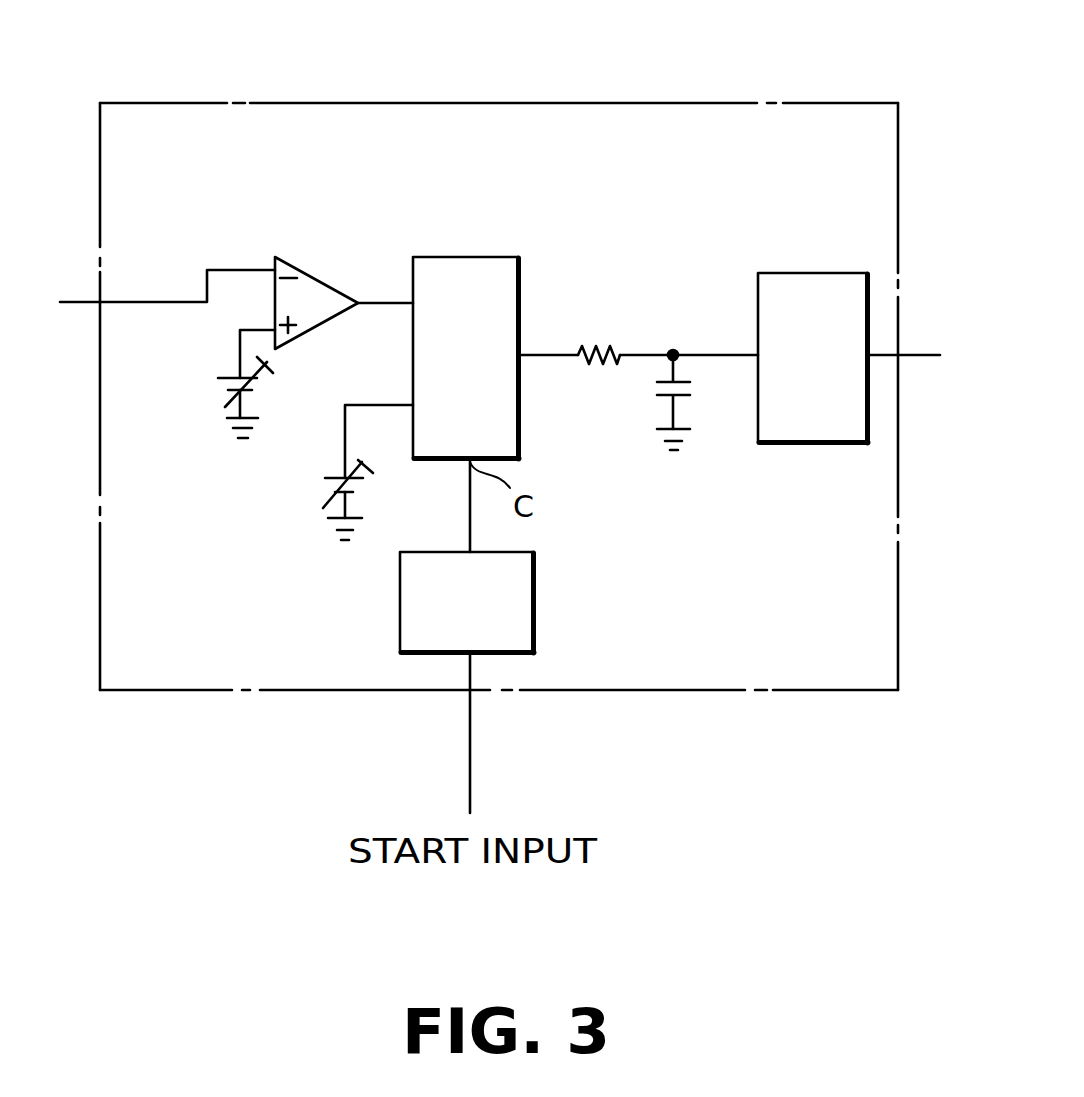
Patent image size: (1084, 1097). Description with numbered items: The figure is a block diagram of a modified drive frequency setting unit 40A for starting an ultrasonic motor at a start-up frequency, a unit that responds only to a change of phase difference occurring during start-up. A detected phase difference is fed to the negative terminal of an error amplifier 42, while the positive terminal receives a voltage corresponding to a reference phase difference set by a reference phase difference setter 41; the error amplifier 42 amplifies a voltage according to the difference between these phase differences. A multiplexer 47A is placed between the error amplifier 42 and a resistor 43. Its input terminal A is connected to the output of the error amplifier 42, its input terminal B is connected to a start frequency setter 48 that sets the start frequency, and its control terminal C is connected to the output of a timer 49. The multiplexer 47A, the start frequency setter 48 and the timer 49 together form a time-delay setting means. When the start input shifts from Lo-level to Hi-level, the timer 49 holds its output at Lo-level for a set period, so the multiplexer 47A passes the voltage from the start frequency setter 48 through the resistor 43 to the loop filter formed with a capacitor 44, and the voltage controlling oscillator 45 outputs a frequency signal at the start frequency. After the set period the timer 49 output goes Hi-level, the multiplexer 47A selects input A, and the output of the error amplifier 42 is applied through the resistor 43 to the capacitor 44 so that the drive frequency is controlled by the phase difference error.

The drive frequency setting unit 40A is at (573, 102).
The reference phase difference setter 41 is at (220, 388).
The error amplifier 42 is at (318, 276).
The resistor 43 is at (612, 348).
The capacitor 44 is at (655, 390).
The voltage controlling oscillator 45 is at (805, 273).
The multiplexer 47A is at (477, 257).
The start frequency setter 48 is at (325, 479).
The timer 49 is at (533, 598).